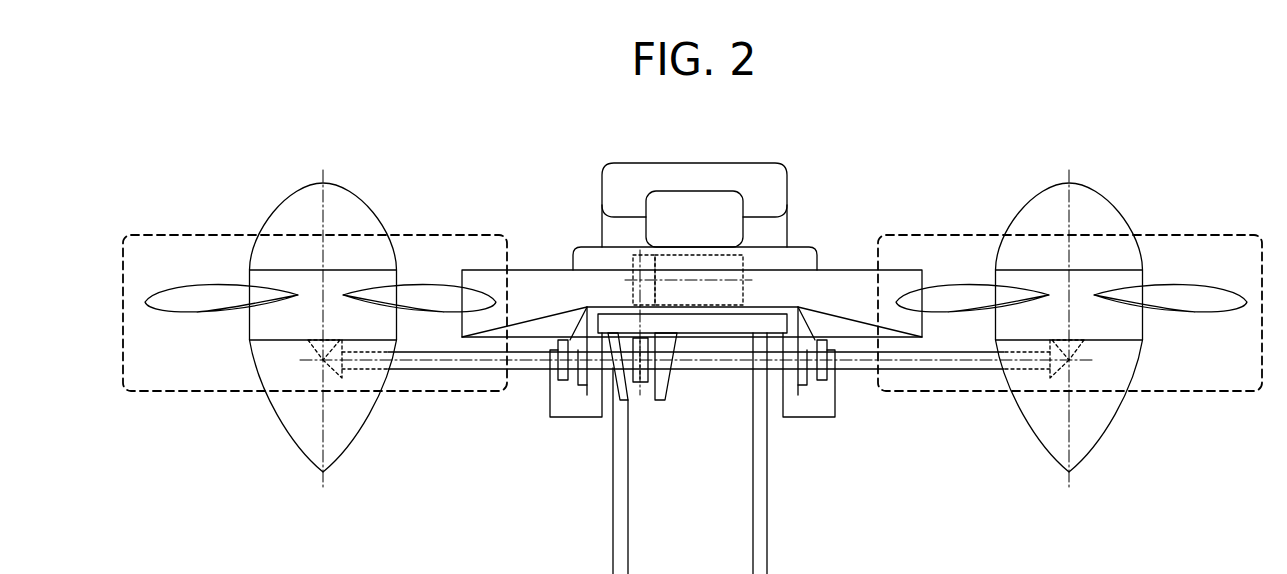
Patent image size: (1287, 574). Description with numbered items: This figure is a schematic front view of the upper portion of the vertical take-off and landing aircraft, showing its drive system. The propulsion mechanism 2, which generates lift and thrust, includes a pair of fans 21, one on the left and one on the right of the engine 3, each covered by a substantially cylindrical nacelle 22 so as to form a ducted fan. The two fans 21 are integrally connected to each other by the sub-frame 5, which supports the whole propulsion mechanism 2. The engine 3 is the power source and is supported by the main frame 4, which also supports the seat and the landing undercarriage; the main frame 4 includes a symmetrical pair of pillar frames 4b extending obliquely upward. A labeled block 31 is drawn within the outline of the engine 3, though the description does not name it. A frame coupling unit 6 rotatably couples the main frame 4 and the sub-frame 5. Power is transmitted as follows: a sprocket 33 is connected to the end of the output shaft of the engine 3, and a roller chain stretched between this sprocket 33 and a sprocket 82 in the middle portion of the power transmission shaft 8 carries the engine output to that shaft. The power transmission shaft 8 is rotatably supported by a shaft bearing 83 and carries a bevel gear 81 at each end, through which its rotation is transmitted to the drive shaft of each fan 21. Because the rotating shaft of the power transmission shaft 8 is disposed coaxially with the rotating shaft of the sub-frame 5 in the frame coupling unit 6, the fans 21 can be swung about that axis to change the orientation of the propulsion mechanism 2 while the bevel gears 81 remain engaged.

The propulsion mechanism 2 is at (209, 194).
The fan 21 is at (294, 192).
The nacelle 22 is at (423, 233).
The engine 3 is at (695, 200).
The seat 31 is at (706, 230).
The sprocket 33 is at (632, 288).
The main frame 4 is at (734, 335).
The pillar frame 4b is at (630, 502).
The sub-frame 5 is at (534, 270).
The frame coupling unit 6 is at (573, 418).
The power transmission shaft 8 is at (862, 372).
The bevel gear 81 is at (322, 368).
The sprocket 82 is at (641, 392).
The shaft bearing 83 is at (673, 384).